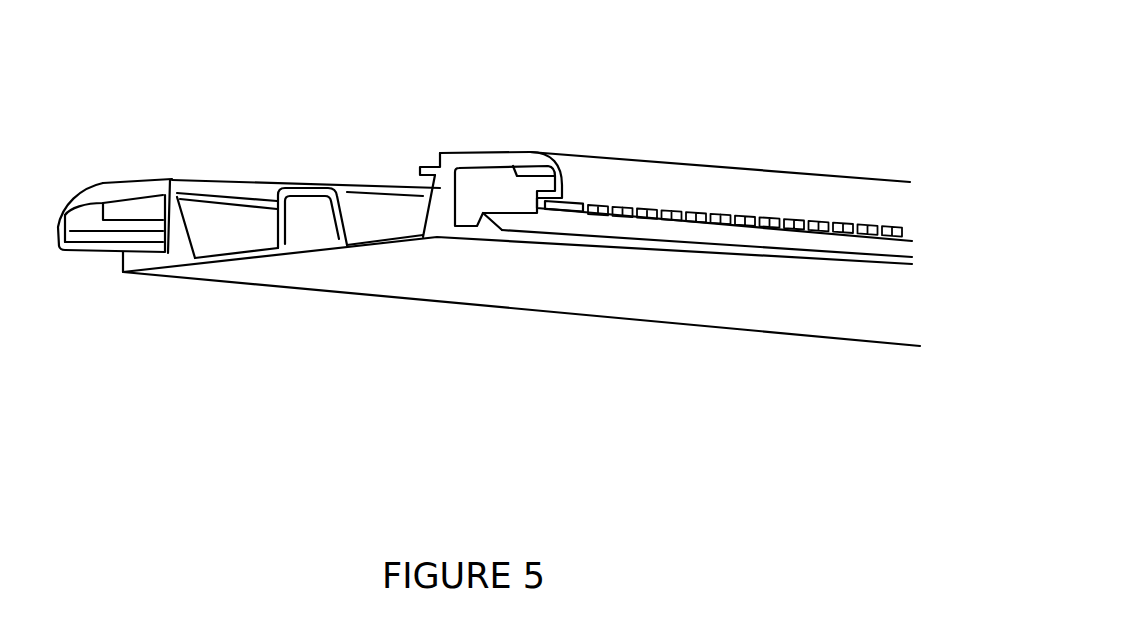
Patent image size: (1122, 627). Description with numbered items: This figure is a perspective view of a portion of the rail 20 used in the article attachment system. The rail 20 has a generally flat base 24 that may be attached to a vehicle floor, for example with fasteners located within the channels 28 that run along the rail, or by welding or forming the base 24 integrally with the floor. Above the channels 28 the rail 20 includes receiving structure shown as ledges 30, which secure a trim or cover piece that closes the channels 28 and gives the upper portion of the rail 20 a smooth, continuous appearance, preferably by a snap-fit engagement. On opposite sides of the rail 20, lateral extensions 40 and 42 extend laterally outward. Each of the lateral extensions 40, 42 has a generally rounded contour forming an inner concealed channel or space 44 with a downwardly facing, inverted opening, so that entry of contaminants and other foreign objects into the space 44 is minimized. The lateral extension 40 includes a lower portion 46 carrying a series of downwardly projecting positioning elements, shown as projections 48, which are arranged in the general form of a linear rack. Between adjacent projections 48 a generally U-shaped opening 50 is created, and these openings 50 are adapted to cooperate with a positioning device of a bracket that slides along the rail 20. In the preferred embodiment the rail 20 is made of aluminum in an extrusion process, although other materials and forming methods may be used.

The rail 20 is at (730, 80).
The base 24 is at (444, 281).
The channels 28 is at (222, 242).
The ledges 30 is at (190, 192).
The lateral extension 40 is at (99, 184).
The lateral extension 42 is at (494, 150).
The inner concealed channel or space 44 is at (140, 236).
The lower portion 46 is at (548, 203).
The projections 48 is at (628, 207).
The U-shaped opening 50 is at (634, 220).